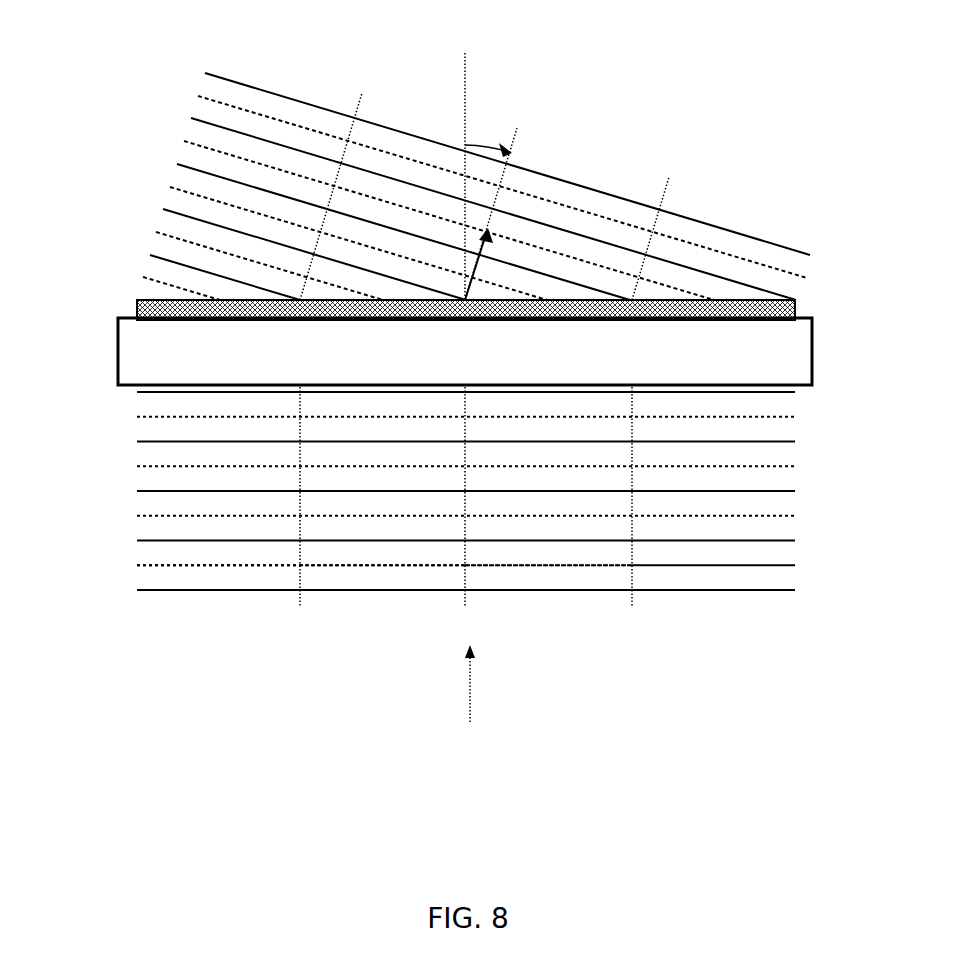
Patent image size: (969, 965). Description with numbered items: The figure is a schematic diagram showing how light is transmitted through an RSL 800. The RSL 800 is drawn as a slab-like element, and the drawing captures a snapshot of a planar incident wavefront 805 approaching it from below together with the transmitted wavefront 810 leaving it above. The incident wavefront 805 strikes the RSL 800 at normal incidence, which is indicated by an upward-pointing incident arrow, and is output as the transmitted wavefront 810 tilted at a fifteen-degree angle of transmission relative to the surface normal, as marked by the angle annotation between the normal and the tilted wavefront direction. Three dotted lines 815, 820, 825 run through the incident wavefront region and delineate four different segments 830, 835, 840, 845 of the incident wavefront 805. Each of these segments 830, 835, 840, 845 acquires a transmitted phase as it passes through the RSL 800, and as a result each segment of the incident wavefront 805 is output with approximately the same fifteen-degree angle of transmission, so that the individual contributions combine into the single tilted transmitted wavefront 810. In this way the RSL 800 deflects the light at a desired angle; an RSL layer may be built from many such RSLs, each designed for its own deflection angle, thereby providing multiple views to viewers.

The RSL 800 is at (117, 350).
The planar incident wavefront 805 is at (130, 473).
The transmitted wavefront 810 is at (179, 128).
The dotted line 815 is at (300, 592).
The dotted line 820 is at (467, 593).
The dotted line 825 is at (632, 590).
The segment of the incident wavefront 830 is at (197, 565).
The segment of the incident wavefront 835 is at (400, 565).
The segment of the incident wavefront 840 is at (572, 565).
The segment of the incident wavefront 845 is at (748, 565).